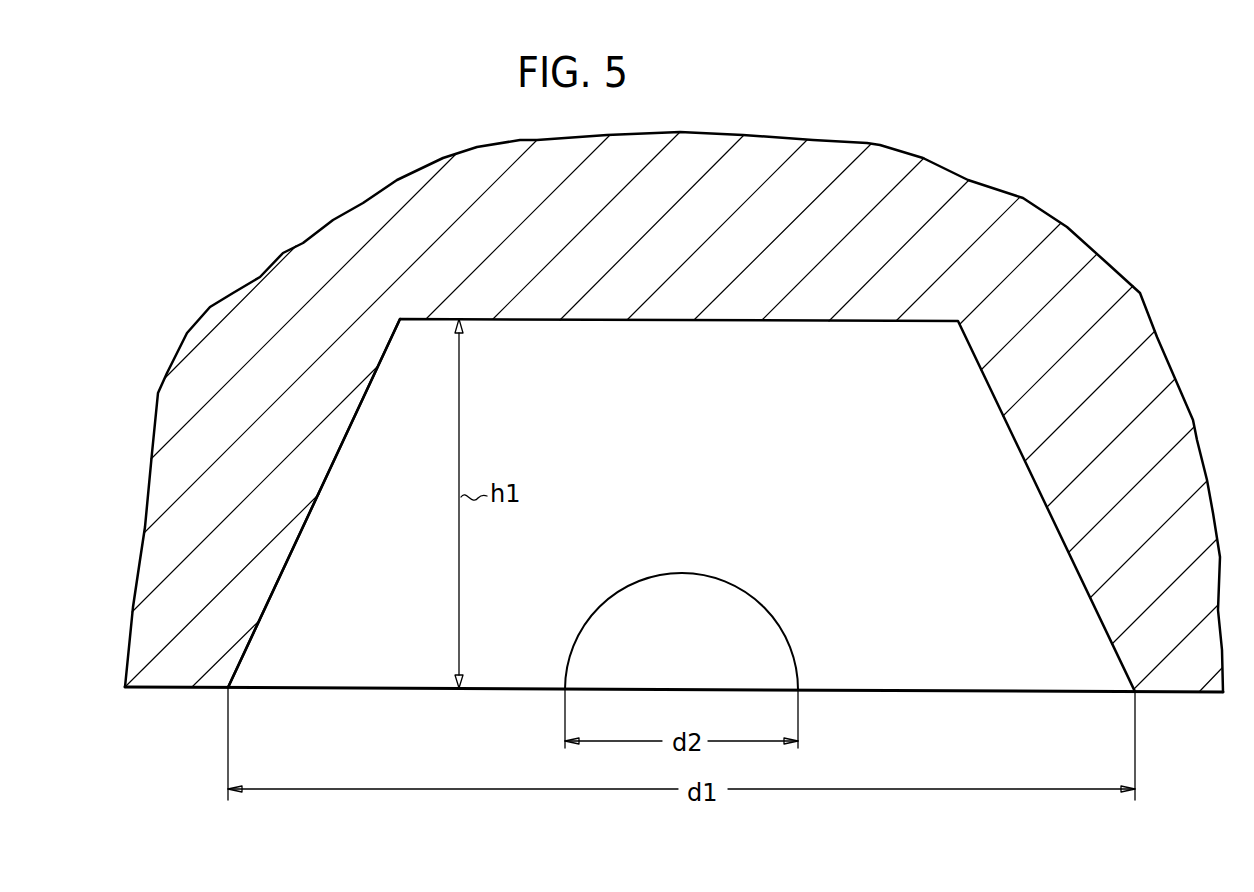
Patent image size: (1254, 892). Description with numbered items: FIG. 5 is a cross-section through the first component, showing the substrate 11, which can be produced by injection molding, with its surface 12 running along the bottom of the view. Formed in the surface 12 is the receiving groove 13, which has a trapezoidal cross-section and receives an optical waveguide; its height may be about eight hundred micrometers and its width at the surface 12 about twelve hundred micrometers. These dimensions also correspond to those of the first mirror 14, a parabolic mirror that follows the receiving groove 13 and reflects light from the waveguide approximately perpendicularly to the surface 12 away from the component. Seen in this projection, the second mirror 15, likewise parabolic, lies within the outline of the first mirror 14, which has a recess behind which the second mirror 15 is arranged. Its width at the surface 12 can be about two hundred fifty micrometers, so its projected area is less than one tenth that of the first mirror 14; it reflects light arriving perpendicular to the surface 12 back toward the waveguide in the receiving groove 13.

The substrate 11 is at (710, 155).
The surface 12 is at (173, 692).
The receiving groove 13 is at (318, 494).
The first mirror 14 is at (691, 471).
The second mirror 15 is at (693, 655).